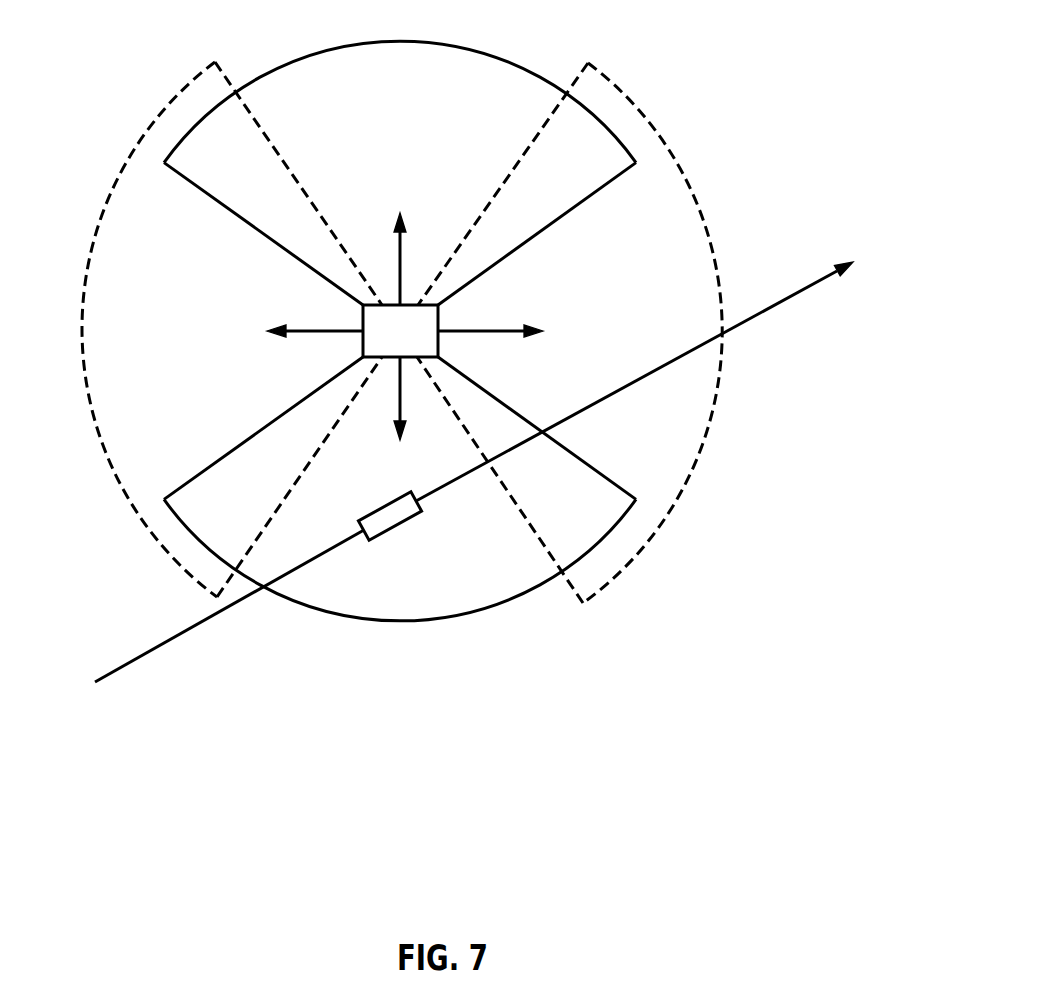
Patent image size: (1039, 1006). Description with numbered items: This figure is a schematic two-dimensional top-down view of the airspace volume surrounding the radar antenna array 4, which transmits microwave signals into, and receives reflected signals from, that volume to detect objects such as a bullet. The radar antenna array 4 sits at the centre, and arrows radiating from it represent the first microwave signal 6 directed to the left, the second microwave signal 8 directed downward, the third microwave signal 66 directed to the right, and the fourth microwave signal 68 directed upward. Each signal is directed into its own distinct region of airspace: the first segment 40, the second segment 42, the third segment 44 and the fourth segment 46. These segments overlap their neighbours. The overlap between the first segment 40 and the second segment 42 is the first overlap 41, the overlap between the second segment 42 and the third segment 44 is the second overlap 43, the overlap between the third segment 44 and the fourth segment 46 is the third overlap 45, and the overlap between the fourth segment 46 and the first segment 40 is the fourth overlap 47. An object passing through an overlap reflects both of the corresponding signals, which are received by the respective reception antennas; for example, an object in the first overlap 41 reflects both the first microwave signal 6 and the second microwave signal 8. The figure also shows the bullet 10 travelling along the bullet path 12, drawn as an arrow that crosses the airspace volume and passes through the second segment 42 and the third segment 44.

The radar antenna array 4 is at (408, 343).
The first microwave signal 6 is at (307, 331).
The second microwave signal 8 is at (400, 397).
The bullet 10 is at (393, 530).
The bullet path 12 is at (743, 323).
The first segment 40 is at (190, 342).
The first overlap 41 is at (252, 515).
The second segment 42 is at (352, 497).
The second overlap 43 is at (568, 512).
The third segment 44 is at (637, 324).
The third overlap 45 is at (567, 190).
The fourth segment 46 is at (410, 107).
The fourth overlap 47 is at (260, 197).
The third microwave signal 66 is at (513, 331).
The fourth microwave signal 68 is at (400, 257).